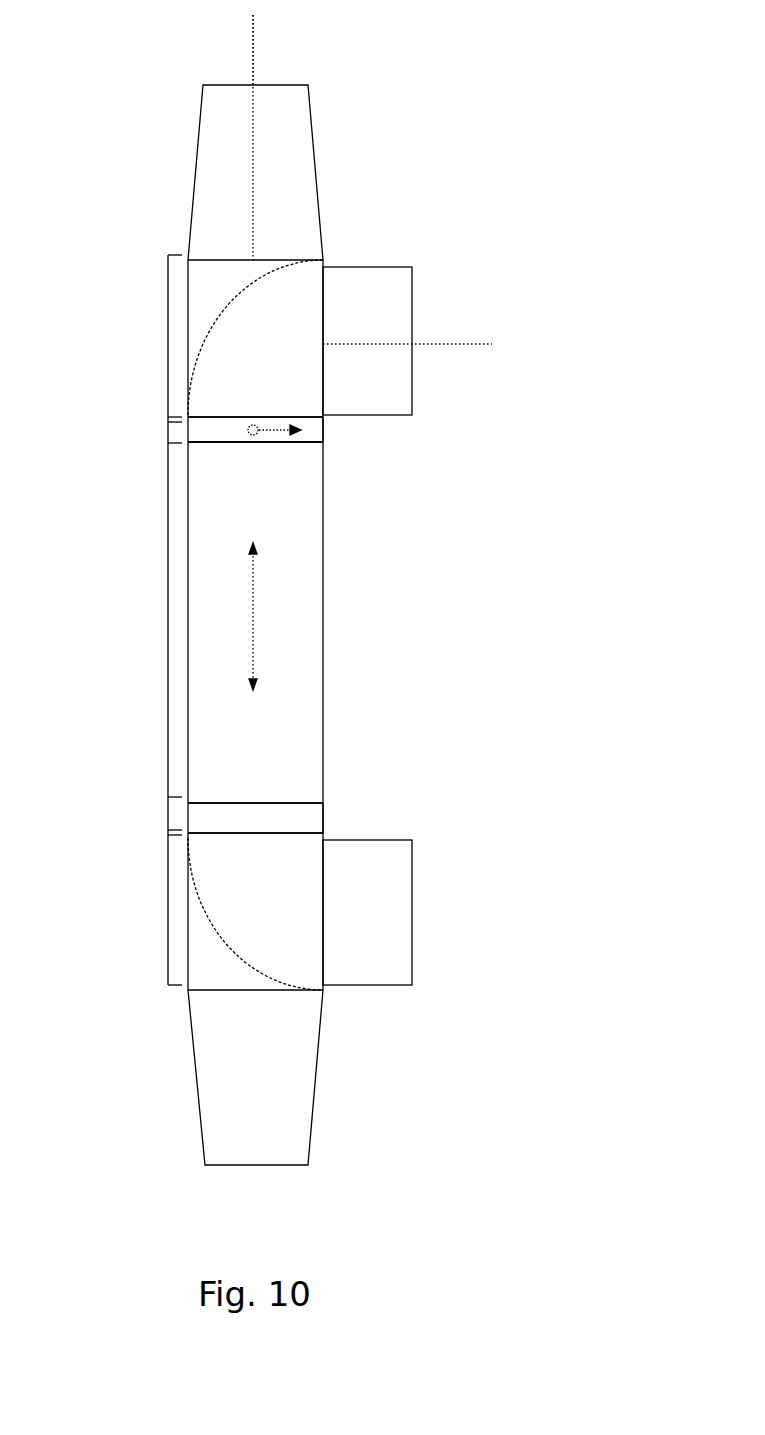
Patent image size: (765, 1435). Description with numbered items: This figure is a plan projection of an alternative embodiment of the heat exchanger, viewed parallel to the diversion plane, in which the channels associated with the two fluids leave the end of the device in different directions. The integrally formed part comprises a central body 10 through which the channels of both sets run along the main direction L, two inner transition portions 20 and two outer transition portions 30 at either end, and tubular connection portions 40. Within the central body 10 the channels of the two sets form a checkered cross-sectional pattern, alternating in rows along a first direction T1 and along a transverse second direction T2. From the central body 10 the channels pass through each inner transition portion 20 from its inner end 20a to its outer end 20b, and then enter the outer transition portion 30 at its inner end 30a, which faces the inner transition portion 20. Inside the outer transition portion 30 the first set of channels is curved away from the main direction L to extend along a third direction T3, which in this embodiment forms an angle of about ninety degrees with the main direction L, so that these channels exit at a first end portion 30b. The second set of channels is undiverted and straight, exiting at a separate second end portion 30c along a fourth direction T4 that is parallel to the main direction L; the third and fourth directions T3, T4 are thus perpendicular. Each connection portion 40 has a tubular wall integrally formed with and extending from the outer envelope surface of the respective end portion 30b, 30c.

The central body 10 is at (168, 620).
The inner transition portion 20 is at (168, 432).
The inner end of inner transition portion 20a is at (223, 442).
The outer end of inner transition portion 20b is at (305, 430).
The outer transition portion 30 is at (168, 337).
The inner end of outer transition portion 30a is at (297, 417).
The first end portion of outer transition portion 30b is at (330, 288).
The second end portion of outer transition portion 30c is at (220, 260).
The tubular connection portion 40 is at (288, 85).
The first direction T1 is at (267, 442).
The second direction T2 is at (300, 442).
The third direction T3 is at (455, 344).
The fourth direction T4 is at (252, 39).
The main direction L is at (262, 616).